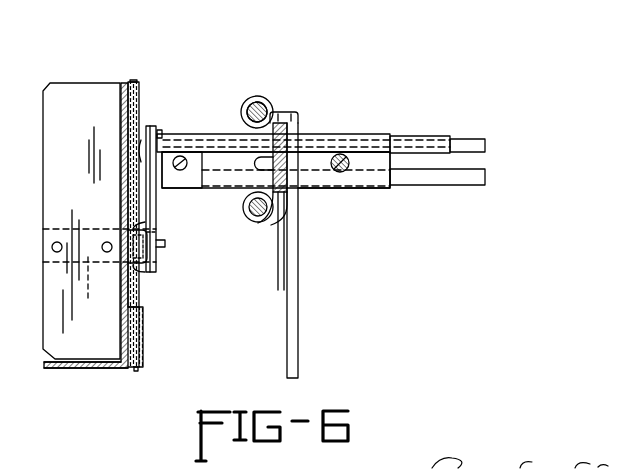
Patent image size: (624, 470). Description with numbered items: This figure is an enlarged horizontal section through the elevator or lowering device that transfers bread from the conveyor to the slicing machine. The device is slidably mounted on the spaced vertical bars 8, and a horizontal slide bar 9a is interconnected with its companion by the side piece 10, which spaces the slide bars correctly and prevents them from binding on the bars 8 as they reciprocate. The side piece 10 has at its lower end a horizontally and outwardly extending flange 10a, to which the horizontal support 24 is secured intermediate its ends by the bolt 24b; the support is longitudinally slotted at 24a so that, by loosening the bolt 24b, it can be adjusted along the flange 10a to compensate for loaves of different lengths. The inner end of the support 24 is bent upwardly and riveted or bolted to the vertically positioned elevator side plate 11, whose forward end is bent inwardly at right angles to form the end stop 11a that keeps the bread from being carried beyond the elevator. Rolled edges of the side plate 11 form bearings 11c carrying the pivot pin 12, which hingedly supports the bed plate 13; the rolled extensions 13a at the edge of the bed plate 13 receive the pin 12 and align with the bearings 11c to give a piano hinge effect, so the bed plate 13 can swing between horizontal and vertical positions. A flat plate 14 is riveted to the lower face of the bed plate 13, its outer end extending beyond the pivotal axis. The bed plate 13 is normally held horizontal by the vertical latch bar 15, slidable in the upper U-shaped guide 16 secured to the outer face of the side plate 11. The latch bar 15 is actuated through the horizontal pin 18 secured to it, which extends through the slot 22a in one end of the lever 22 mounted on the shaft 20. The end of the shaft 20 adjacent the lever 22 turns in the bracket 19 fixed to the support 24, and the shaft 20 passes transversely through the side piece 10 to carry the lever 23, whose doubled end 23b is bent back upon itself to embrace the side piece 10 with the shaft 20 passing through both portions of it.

The vertical bars 8 is at (268, 106).
The horizontal slide bar 9a is at (262, 100).
The side piece 10 is at (281, 194).
The flange 10a is at (366, 178).
The elevator side plate 11 is at (124, 83).
The end stop 11a is at (81, 368).
The bearings 11c is at (146, 343).
The pivot pin 12 is at (133, 82).
The bed plate 13 is at (81, 221).
The rolled extensions 13a is at (143, 302).
The flat plate 14 is at (99, 271).
The latch bar 15 is at (158, 256).
The upper U-shaped guide 16 is at (147, 231).
The pin 18 is at (166, 243).
The bracket 19 is at (185, 172).
The shaft 20 is at (431, 140).
The lever 22 is at (150, 127).
The slot 22a is at (157, 233).
The lever 23 is at (298, 272).
The doubled end 23b is at (272, 135).
The horizontal support 24 is at (303, 154).
The slot 24a is at (463, 162).
The bolt 24b is at (340, 173).